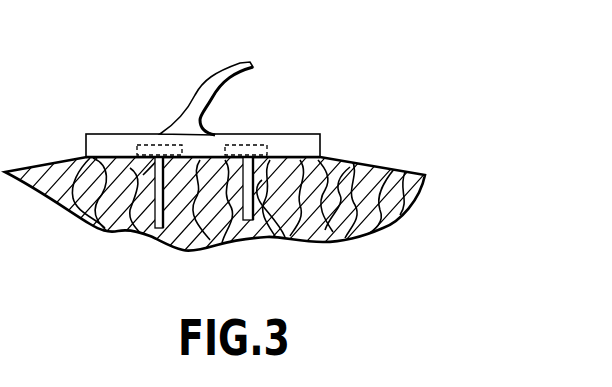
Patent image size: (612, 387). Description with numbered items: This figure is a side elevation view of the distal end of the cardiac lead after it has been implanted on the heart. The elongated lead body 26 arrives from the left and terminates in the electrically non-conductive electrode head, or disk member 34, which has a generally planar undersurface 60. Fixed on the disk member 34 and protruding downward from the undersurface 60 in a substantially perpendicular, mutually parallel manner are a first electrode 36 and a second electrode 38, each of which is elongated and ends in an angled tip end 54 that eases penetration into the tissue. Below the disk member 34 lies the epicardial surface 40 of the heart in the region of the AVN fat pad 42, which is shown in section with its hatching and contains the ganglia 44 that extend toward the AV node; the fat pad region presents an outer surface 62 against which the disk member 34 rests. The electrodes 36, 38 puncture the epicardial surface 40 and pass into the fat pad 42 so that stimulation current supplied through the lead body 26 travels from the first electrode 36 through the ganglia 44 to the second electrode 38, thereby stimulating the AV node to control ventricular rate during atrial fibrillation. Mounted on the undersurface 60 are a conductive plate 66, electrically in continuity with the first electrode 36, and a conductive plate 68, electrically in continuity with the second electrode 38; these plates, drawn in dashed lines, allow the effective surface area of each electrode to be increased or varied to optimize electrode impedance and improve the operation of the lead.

The lead body 26 is at (222, 73).
The disk member 34 is at (189, 104).
The first electrode 36 is at (285, 237).
The second electrode 38 is at (158, 220).
The epicardial surface 40 is at (410, 168).
The AVN fat pad 42 is at (395, 168).
The ganglia 44 is at (350, 167).
The angled tip end 54 is at (251, 236).
The planar undersurface 60 is at (333, 232).
The outer surface 62 is at (300, 134).
The conductive plate 66 is at (267, 148).
The conductive plate 68 is at (137, 147).